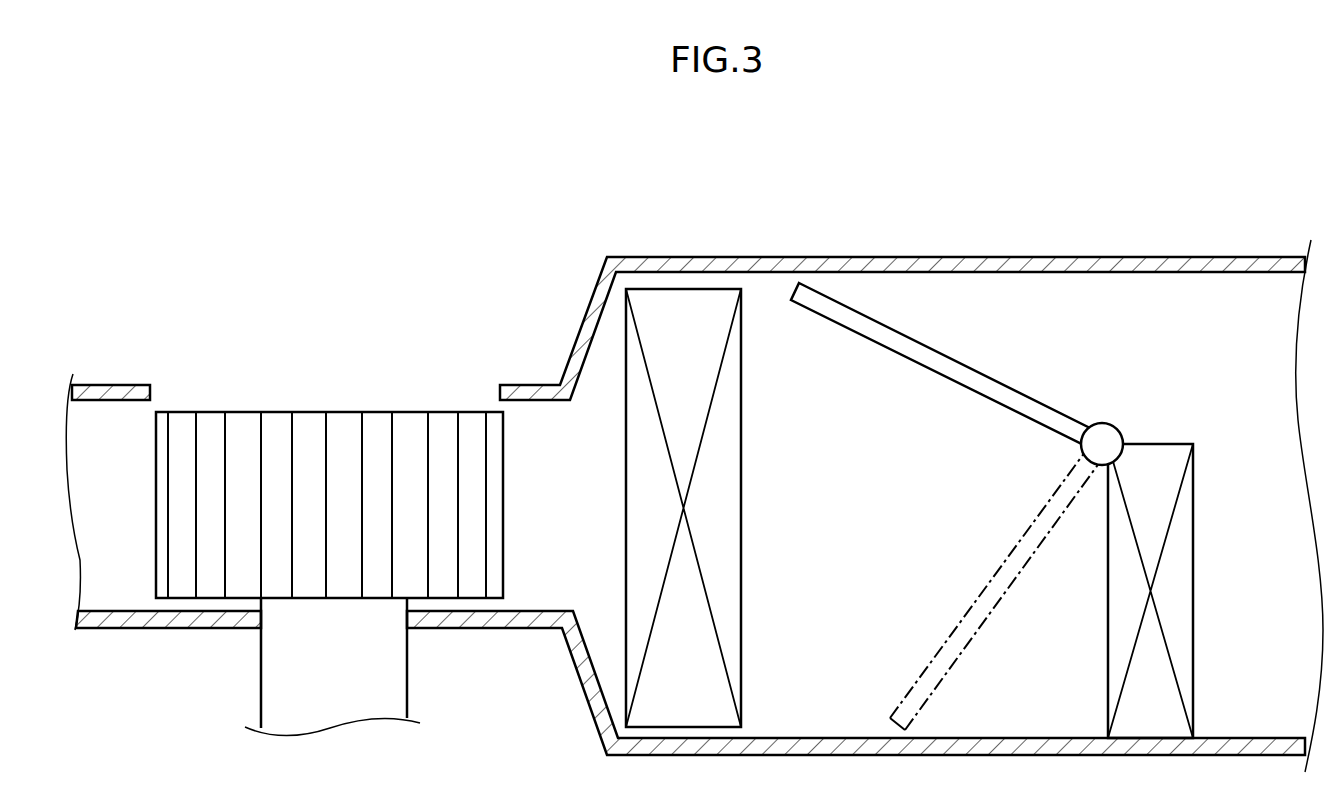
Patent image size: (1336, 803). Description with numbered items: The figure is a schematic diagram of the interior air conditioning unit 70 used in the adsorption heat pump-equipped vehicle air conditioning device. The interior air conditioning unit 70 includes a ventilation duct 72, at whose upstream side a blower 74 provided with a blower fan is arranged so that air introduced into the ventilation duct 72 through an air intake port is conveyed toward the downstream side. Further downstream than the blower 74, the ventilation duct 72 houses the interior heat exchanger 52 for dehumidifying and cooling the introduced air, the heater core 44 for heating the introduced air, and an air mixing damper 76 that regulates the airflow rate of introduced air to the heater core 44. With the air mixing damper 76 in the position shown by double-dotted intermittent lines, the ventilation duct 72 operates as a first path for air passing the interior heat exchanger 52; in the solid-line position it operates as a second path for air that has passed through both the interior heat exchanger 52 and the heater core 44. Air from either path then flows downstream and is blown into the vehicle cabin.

The interior air conditioning unit 70 is at (316, 196).
The ventilation duct 72 is at (847, 256).
The blower 74 is at (381, 411).
The interior heat exchanger 52 is at (741, 462).
The heater core 44 is at (1193, 588).
The air mixing damper 76 is at (1028, 396).